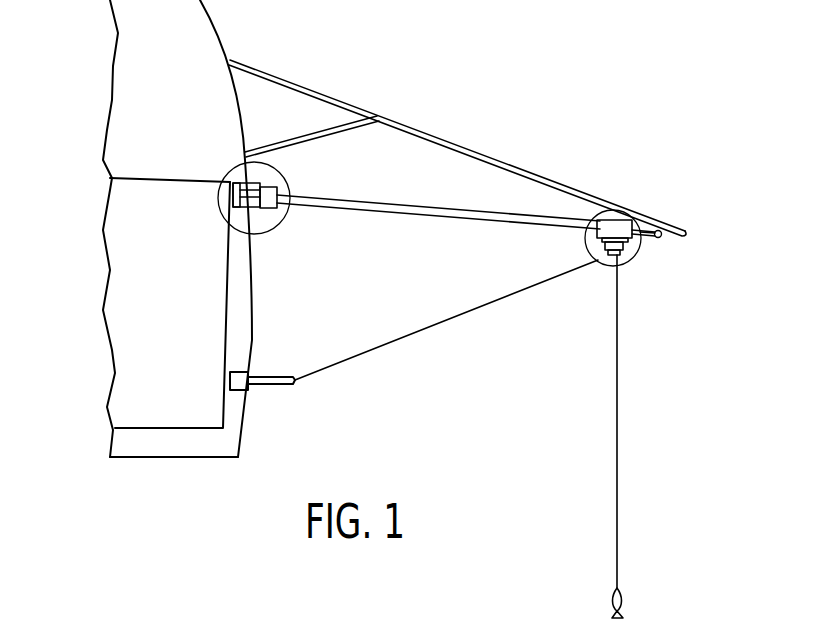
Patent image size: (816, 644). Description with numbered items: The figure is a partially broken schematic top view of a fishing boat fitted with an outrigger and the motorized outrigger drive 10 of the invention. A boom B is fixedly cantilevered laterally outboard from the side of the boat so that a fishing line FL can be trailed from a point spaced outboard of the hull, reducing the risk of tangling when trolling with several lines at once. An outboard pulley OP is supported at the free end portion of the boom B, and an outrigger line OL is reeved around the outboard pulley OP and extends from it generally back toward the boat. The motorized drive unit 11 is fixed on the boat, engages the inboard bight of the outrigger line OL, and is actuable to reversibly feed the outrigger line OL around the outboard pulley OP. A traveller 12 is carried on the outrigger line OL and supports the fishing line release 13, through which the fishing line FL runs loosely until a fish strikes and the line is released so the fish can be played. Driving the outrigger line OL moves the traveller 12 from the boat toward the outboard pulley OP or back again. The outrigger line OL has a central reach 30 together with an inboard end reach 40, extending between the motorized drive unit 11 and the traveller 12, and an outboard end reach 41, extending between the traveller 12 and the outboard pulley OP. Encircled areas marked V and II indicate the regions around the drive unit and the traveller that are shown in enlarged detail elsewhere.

The motorized outrigger drive 10 is at (655, 203).
The motorized drive unit 11 is at (263, 212).
The traveller 12 is at (603, 210).
The fishing line release 13 is at (624, 256).
The central reach 30 is at (402, 201).
The inboard end reach 40 is at (482, 224).
The outboard end reach 41 is at (647, 237).
The boom B is at (462, 146).
The outrigger line OL is at (406, 222).
The outboard pulley OP is at (661, 237).
The fishing line FL is at (377, 349).
The detail view V is at (150, 234).
The detail view II is at (668, 266).